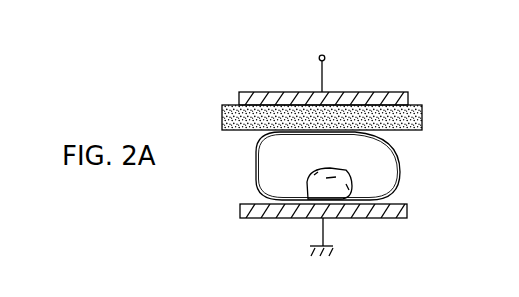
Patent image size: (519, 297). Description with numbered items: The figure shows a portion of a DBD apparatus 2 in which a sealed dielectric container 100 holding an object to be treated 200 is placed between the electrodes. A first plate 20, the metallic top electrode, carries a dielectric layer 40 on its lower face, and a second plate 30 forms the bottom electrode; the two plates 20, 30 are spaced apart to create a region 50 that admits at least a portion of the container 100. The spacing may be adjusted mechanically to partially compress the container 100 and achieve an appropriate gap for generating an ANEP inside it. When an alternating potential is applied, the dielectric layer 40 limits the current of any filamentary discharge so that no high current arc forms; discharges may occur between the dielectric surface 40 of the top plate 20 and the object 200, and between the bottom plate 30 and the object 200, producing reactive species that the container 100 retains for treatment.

The DBD apparatus 2 is at (504, 78).
The first plate 20 is at (354, 92).
The dielectric layer 40 is at (418, 105).
The second plate 30 is at (253, 218).
The region 50 is at (242, 176).
The container 100 is at (398, 183).
The object to be treated 200 is at (338, 168).